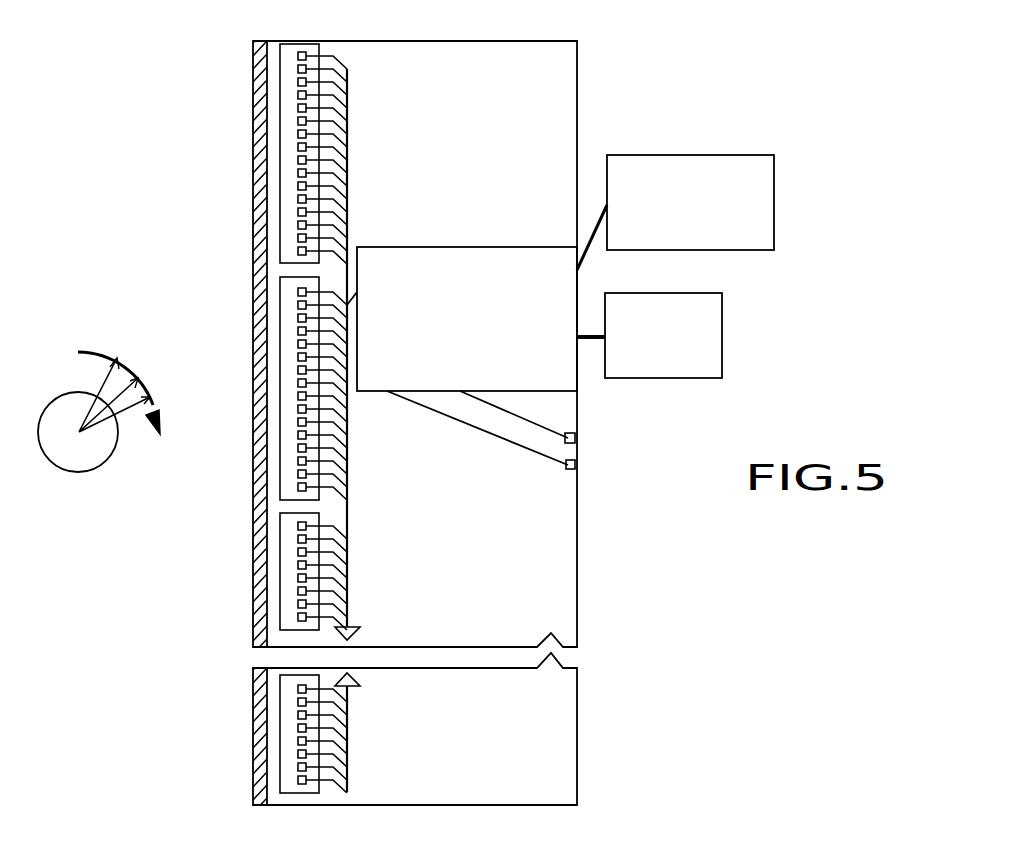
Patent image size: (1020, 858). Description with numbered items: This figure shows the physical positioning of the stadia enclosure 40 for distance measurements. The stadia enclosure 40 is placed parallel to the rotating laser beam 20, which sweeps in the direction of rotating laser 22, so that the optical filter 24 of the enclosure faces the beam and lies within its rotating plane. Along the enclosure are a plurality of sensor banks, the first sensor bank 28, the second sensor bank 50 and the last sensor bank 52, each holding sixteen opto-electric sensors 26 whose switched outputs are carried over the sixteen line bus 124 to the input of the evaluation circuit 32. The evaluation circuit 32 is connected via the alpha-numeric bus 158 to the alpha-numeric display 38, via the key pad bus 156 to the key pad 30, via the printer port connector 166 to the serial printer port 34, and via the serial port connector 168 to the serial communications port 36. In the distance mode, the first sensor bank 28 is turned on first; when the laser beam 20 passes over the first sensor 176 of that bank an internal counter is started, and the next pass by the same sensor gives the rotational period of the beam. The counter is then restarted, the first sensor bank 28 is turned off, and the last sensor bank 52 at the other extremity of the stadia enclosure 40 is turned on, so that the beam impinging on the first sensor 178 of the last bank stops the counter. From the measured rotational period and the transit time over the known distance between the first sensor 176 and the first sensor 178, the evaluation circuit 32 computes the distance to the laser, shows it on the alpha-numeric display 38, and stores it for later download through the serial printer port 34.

The rotating laser beam 20 is at (67, 427).
The direction of rotating laser 22 is at (120, 373).
The optical filter 24 is at (258, 325).
The opto-electric sensor 26 is at (303, 173).
The sensor bank #1 28 is at (252, 134).
The key pad 30 is at (703, 366).
The evaluation circuit 32 is at (518, 352).
The serial printer port 34 is at (576, 443).
The serial communications port 36 is at (576, 470).
The alpha-numeric display 38 is at (743, 177).
The stadia enclosure 40 is at (577, 77).
The sensor bank #2 50 is at (280, 463).
The sensor bank # "N" 52 is at (243, 592).
The 16 line bus 124 is at (347, 517).
The key pad bus 156 is at (583, 332).
The alpha-numeric bus 158 is at (596, 266).
The printer port connector 166 is at (515, 415).
The serial port connector 168 is at (468, 425).
The bank #1, sensor #1 176 is at (302, 55).
The bank # "N", sensor #1 178 is at (302, 527).